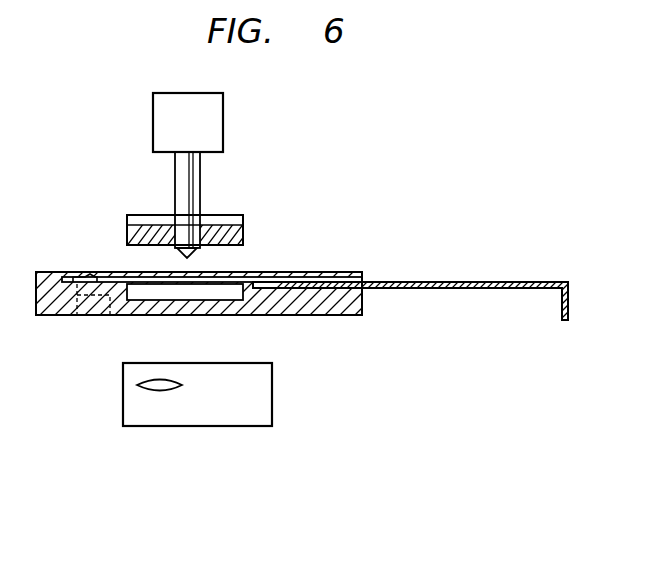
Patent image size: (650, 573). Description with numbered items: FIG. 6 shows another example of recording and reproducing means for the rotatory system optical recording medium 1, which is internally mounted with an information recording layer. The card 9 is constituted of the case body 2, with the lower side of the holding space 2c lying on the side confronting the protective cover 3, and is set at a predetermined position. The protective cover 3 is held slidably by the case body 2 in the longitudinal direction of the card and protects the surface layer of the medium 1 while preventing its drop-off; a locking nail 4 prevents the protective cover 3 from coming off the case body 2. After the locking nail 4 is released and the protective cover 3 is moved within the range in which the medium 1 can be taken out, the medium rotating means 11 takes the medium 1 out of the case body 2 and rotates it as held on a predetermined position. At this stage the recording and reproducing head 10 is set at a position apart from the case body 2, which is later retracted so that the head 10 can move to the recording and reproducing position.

The medium rotating means 11 is at (223, 122).
The rotatory system optical recording medium 1 is at (243, 232).
The case body 2 is at (354, 310).
The holding space 2c is at (228, 298).
The card 9 is at (339, 261).
The locking nail 4 is at (85, 278).
The protective cover 3 is at (521, 282).
The recording and reproducing head 10 is at (272, 397).